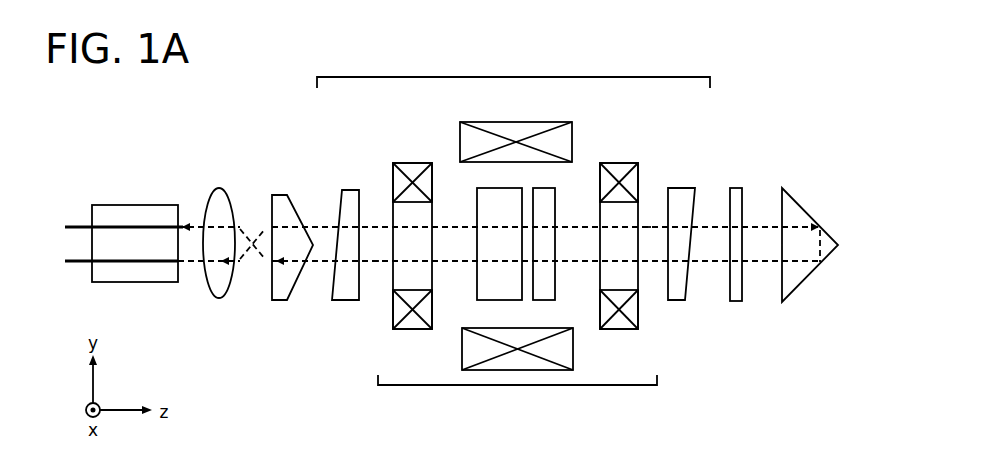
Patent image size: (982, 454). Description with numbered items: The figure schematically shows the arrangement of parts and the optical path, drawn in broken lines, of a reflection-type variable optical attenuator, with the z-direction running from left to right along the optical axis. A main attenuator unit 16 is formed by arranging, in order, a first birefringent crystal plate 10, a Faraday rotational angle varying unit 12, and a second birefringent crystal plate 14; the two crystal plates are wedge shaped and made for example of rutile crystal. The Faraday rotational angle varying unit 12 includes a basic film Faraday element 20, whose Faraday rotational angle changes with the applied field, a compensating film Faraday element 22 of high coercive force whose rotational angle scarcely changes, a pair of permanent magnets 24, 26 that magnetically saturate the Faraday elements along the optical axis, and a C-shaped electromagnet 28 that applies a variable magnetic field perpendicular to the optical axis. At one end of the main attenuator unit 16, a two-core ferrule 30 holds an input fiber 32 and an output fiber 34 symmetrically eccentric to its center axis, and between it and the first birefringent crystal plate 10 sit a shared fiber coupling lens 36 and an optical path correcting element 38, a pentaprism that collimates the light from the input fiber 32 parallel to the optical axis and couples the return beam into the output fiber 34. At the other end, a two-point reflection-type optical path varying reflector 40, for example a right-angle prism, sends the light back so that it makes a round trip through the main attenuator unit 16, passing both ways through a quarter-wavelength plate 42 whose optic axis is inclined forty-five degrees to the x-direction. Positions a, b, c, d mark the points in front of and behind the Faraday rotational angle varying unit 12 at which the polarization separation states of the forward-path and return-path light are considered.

The first birefringent crystal plate 10 is at (343, 200).
The Faraday rotational angle varying unit 12 is at (517, 371).
The second birefringent crystal plate 14 is at (683, 195).
The main attenuator unit 16 is at (513, 68).
The basic film Faraday element 20 is at (478, 283).
The compensating film Faraday element 22 is at (556, 291).
The permanent magnet 24 is at (417, 162).
The permanent magnet 26 is at (615, 164).
The C-shaped electromagnet 28 is at (455, 125).
The two-core ferrule 30 is at (137, 277).
The input fiber 32 is at (170, 263).
The output fiber 34 is at (141, 226).
The fiber coupling lens 36 is at (212, 205).
The optical path correcting element 38 is at (283, 200).
The optical path varying reflector 40 is at (800, 212).
The quarter-wavelength plate 42 is at (740, 292).
The position a is at (375, 226).
The position b is at (648, 226).
The position c is at (645, 264).
The position d is at (376, 263).